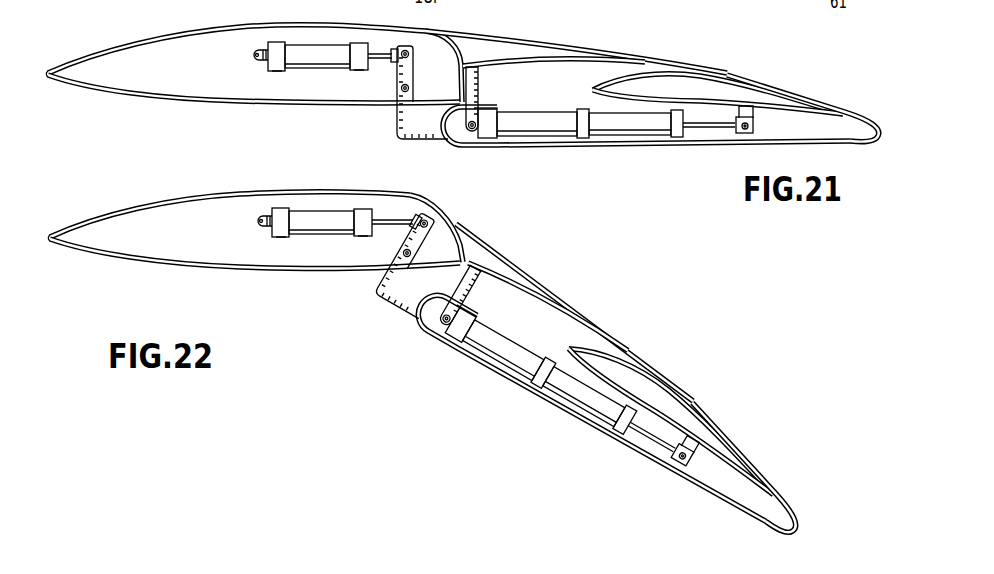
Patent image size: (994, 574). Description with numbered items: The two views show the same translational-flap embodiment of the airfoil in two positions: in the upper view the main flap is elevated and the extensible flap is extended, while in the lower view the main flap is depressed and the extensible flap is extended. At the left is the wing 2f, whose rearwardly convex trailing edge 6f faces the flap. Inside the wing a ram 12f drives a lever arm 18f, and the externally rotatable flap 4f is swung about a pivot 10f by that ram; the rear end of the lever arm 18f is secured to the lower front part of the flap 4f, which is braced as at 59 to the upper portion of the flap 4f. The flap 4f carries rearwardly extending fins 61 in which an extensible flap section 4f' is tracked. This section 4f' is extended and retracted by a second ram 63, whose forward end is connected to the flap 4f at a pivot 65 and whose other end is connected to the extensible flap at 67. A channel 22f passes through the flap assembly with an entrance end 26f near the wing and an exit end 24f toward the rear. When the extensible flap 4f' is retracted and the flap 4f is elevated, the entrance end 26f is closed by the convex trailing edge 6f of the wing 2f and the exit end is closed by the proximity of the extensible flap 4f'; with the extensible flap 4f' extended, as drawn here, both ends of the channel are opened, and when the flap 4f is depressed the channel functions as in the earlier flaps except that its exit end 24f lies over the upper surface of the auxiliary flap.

In FIG. 21, the wing 2f is at (160, 37).
In FIG. 22, the wing 2f is at (125, 208).
In FIG. 21, the ram 12f is at (303, 50).
In FIG. 22, the ram 12f is at (312, 207).
In FIG. 21, the flap 4f is at (576, 41).
In FIG. 22, the flap 4f is at (574, 312).
In FIG. 21, the entrance end of channel 26f is at (590, 72).
In FIG. 22, the entrance end of channel 26f is at (570, 317).
In FIG. 21, the channel 22f is at (667, 72).
In FIG. 22, the channel 22f is at (637, 362).
In FIG. 21, the exit end of channel 24f is at (724, 73).
In FIG. 22, the exit end of channel 24f is at (690, 403).
In FIG. 21, the extensible flap section 4f' is at (803, 98).
In FIG. 22, the extensible flap section 4f' is at (741, 470).
In FIG. 21, the rearwardly extending fins 61 is at (848, 128).
In FIG. 22, the rearwardly extending fins 61 is at (747, 515).
In FIG. 21, the rearwardly convex trailing edge 6f is at (458, 85).
In FIG. 21, the brace 59 is at (480, 88).
In FIG. 22, the brace 59 is at (473, 280).
In FIG. 21, the pivot 10f is at (399, 92).
In FIG. 22, the pivot 10f is at (397, 257).
In FIG. 21, the lever arm 18f is at (423, 134).
In FIG. 22, the lever arm 18f is at (400, 298).
In FIG. 21, the pivot 65 is at (464, 118).
In FIG. 22, the pivot 65 is at (440, 337).
In FIG. 21, the ram 63 is at (551, 126).
In FIG. 22, the ram 63 is at (513, 373).
In FIG. 21, the connection to extensible flap 67 is at (742, 133).
In FIG. 22, the connection to extensible flap 67 is at (682, 465).